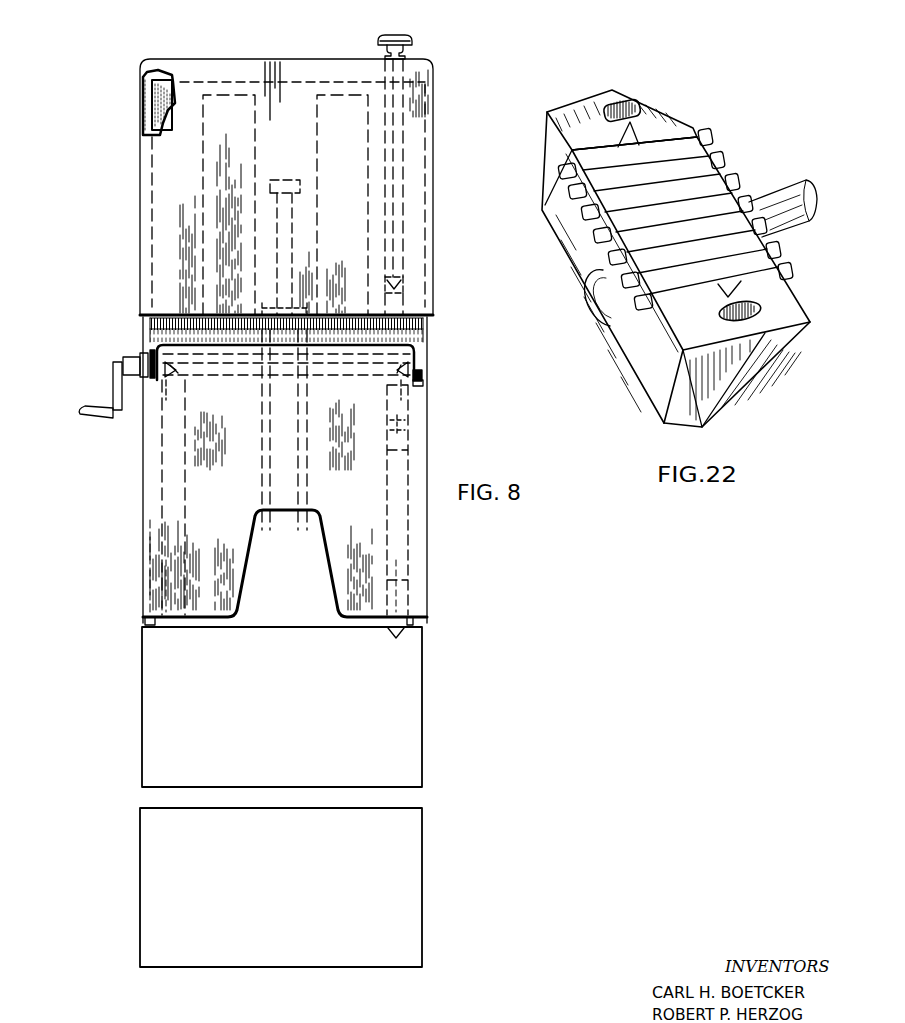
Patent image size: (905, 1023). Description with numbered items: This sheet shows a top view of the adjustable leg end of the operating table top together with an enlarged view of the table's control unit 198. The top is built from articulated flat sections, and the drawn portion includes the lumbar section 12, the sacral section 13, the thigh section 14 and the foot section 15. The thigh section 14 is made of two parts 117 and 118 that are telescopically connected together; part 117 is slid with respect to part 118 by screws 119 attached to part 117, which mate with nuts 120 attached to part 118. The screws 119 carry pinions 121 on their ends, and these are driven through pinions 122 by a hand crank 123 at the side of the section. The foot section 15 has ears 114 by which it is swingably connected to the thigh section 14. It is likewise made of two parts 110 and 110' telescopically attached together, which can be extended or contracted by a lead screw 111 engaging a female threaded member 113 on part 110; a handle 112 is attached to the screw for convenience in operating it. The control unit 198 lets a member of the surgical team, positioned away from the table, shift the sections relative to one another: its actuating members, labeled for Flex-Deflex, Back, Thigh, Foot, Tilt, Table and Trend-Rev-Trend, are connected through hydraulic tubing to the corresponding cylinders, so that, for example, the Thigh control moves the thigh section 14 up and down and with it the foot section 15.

In FIG. 8, the lumbar section 12 is at (276, 887).
In FIG. 8, the sacral section 13 is at (276, 697).
In FIG. 8, the thigh section 14 is at (160, 487).
In FIG. 8, the foot section 15 is at (150, 229).
In FIG. 8, the foot section part 110 is at (242, 330).
In FIG. 8, the foot section part 110' is at (123, 95).
In FIG. 8, the lead screw 111 is at (398, 133).
In FIG. 8, the handle 112 is at (400, 34).
In FIG. 8, the female threaded member 113 is at (400, 292).
In FIG. 8, the ears 114 is at (160, 372).
In FIG. 8, the thigh section part 117 is at (153, 540).
In FIG. 8, the thigh section part 118 is at (147, 620).
In FIG. 8, the screws 119 is at (173, 407).
In FIG. 8, the nuts 120 is at (168, 592).
In FIG. 8, the pinions 121 is at (170, 368).
In FIG. 8, the pinions 122 is at (152, 345).
In FIG. 8, the crank 123 is at (95, 417).
In FIG. 22, the control unit 198 is at (770, 363).